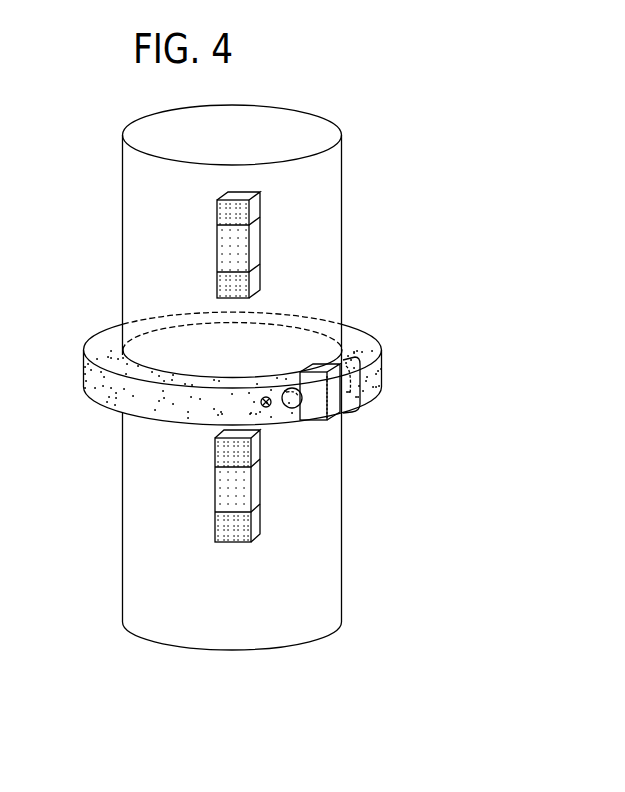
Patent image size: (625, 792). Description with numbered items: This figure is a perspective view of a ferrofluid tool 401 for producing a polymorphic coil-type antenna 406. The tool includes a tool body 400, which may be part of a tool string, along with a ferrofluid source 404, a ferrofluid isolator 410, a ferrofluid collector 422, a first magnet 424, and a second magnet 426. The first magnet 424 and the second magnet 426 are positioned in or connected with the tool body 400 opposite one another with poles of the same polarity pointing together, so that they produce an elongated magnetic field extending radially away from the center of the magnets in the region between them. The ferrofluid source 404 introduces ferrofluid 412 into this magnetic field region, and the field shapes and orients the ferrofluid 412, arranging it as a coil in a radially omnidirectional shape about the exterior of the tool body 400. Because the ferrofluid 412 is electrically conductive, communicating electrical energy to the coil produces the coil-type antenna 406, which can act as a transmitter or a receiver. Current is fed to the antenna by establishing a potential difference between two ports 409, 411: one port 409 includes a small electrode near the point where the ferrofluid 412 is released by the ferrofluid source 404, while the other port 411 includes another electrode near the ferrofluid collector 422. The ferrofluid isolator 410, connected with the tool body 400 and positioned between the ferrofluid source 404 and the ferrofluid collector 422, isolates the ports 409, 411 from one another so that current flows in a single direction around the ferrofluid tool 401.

The ferrofluid tool 401 is at (316, 74).
The tool body 400 is at (328, 160).
The coil-type antenna 406 is at (107, 397).
The ferrofluid 412 is at (366, 344).
The port 411 is at (383, 367).
The first magnet 424 is at (217, 243).
The second magnet 426 is at (215, 490).
The ferrofluid isolator 410 is at (350, 412).
The ferrofluid collector 422 is at (379, 406).
The ferrofluid source 404 is at (300, 408).
The port 409 is at (259, 400).